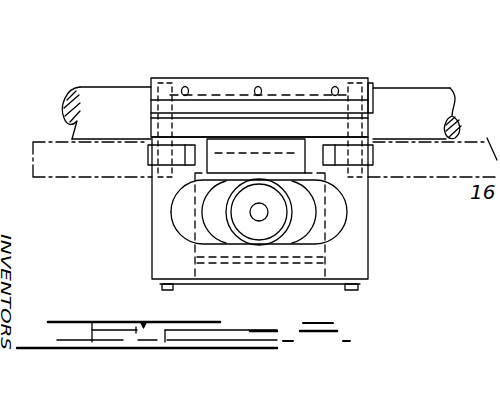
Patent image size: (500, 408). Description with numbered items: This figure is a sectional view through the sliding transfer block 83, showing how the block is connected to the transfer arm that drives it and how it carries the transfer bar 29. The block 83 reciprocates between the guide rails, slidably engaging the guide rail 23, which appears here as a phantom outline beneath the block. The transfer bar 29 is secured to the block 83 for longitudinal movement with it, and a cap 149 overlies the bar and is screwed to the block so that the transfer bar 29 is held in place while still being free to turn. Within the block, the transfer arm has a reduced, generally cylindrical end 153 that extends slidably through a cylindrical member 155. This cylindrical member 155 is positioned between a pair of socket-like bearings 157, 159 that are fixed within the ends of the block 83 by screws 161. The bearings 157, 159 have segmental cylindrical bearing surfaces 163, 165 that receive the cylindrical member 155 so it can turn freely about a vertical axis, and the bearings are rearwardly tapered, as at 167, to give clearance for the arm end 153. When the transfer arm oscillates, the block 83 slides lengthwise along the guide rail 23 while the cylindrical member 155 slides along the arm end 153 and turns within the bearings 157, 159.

The guide rail 23 is at (52, 157).
The transfer bar 29 is at (407, 89).
The transfer block 83 is at (152, 190).
The cap 149 is at (282, 77).
The reduced cylindrical end of transfer arm 153 is at (263, 228).
The cylindrical member 155 is at (301, 226).
The socket-like bearing 157 is at (182, 228).
The socket-like bearing 159 is at (335, 210).
The screws 161 is at (140, 158).
The segmental cylindrical bearing surface 163 is at (204, 199).
The segmental cylindrical bearing surface 165 is at (303, 202).
The rearward taper of bearing 167 is at (180, 199).